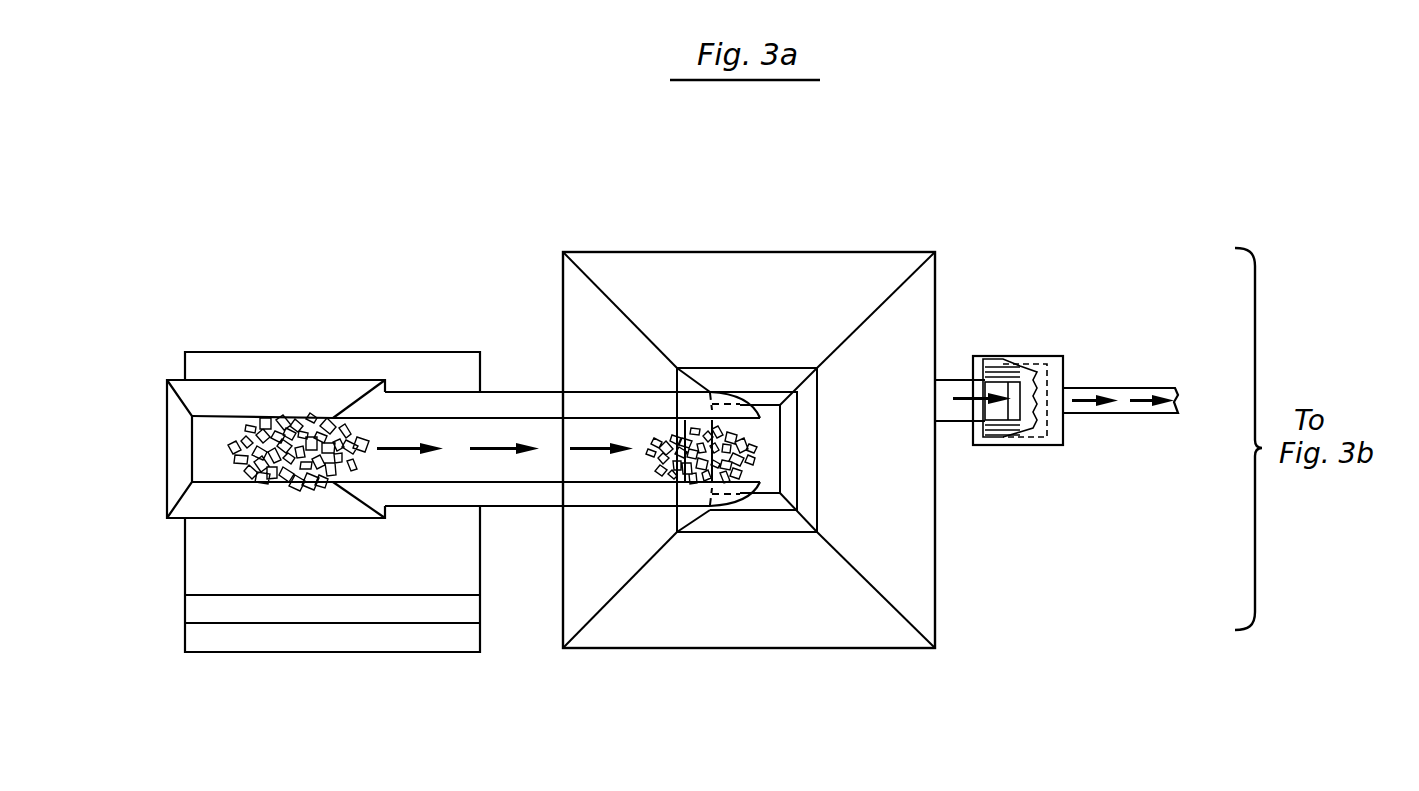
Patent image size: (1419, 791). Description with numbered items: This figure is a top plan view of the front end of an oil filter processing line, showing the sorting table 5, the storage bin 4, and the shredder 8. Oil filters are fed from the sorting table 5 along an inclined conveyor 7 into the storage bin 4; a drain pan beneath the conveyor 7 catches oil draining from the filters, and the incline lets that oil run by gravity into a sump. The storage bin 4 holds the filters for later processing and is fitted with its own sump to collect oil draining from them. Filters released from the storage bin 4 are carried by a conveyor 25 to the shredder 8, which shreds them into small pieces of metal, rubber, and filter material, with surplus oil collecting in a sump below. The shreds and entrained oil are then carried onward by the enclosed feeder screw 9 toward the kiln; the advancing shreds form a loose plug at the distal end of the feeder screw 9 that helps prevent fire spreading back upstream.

The sorting table 5 is at (237, 398).
The inclined conveyor 7 is at (520, 437).
The storage bin 4 is at (760, 317).
The conveyor 25 is at (950, 387).
The shredder 8 is at (1043, 368).
The feeder screw 9 is at (1125, 397).